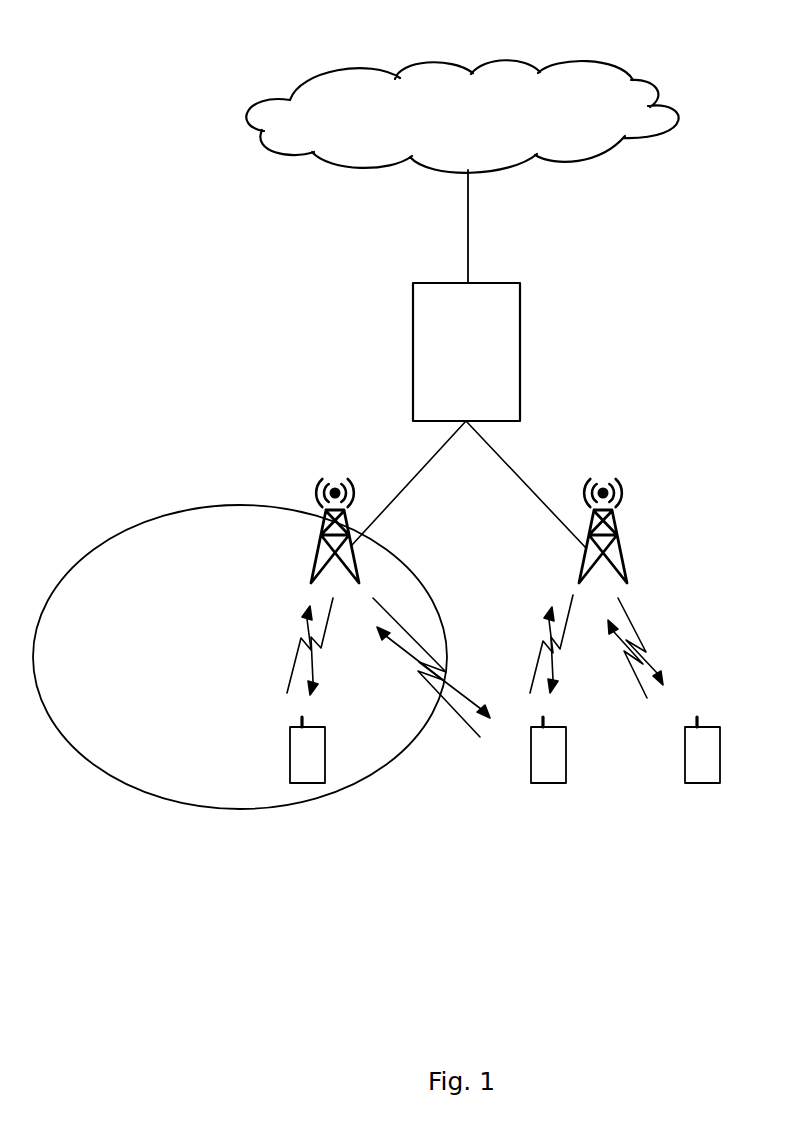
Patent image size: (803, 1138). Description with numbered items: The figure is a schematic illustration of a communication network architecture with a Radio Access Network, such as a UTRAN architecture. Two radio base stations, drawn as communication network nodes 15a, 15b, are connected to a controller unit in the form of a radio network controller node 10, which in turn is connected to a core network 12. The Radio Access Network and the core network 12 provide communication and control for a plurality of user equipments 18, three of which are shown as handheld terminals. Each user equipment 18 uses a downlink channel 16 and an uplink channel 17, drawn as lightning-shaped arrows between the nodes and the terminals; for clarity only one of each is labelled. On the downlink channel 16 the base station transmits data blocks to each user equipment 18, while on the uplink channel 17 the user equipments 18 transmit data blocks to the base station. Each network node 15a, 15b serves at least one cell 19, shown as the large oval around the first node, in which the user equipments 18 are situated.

The radio network controller node 10 is at (497, 348).
The core network 12 is at (643, 90).
The communication network node 15a is at (328, 548).
The communication network node 15b is at (615, 527).
The downlink channel 16 is at (387, 605).
The uplink channel 17 is at (292, 650).
The user equipment 18 is at (303, 763).
The cell 19 is at (216, 808).